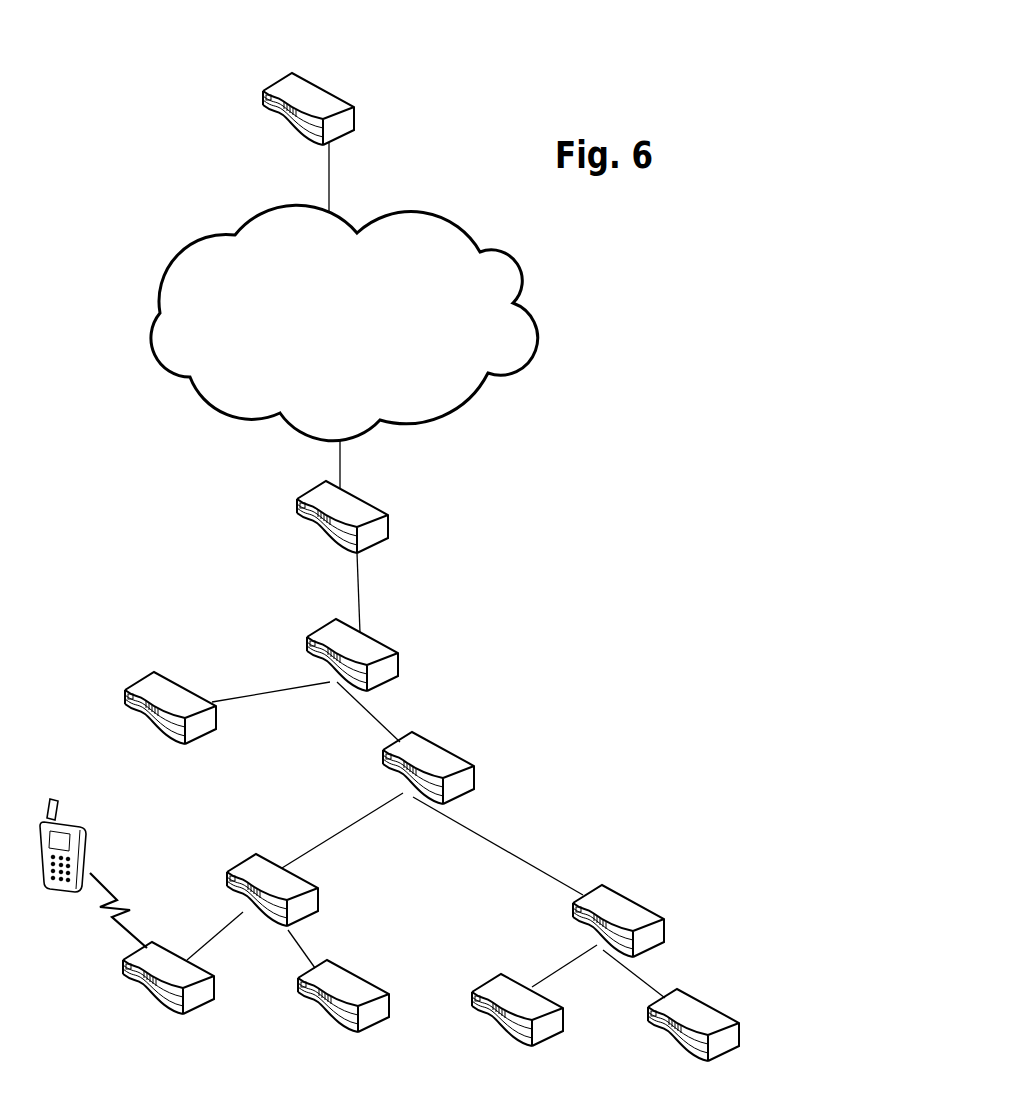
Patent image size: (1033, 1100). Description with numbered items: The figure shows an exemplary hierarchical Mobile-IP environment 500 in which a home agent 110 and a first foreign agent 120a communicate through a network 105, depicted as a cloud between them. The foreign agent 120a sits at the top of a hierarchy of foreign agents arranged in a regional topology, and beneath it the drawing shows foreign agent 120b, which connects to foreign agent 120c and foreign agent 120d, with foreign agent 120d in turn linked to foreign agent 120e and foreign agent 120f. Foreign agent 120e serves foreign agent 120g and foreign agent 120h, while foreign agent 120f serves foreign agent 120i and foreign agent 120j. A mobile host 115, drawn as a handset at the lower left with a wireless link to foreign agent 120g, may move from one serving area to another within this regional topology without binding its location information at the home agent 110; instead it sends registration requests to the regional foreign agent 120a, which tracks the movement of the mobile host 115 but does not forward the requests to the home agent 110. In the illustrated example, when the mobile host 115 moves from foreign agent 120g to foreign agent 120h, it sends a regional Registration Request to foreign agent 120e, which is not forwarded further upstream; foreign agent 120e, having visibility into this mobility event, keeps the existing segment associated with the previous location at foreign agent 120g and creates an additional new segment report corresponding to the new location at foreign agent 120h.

The network system 500 is at (88, 121).
The home agent 110 is at (289, 114).
The network 105 is at (344, 323).
The regional foreign agent 120a is at (381, 517).
The foreign agent 120b is at (374, 655).
The foreign agent 120c is at (181, 704).
The foreign agent 120d is at (444, 768).
The foreign agent 120e is at (299, 890).
The foreign agent 120f is at (641, 921).
The foreign agent 120g is at (157, 988).
The foreign agent 120h is at (321, 996).
The foreign agent 120i is at (514, 1019).
The foreign agent (FA) 120j is at (689, 1035).
The mobile host 115 is at (92, 873).